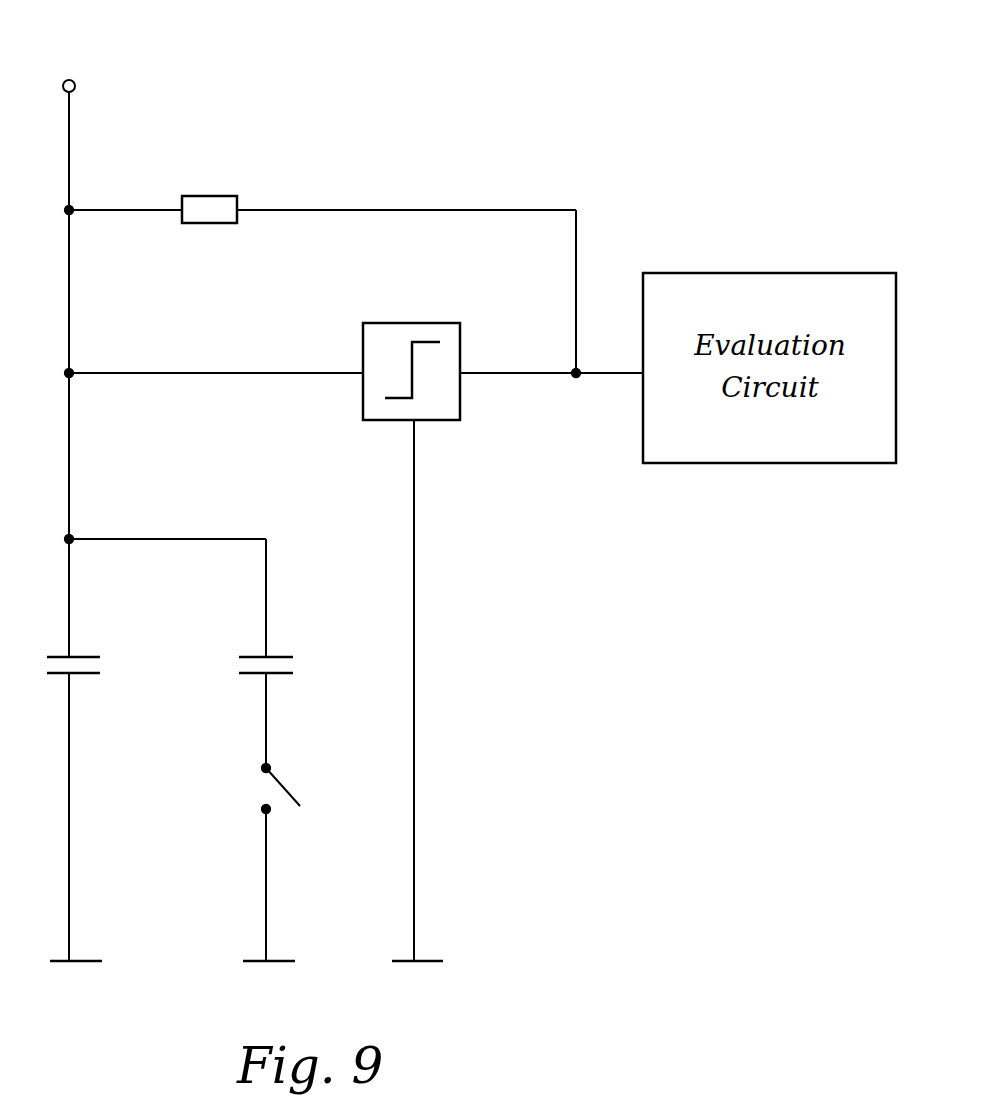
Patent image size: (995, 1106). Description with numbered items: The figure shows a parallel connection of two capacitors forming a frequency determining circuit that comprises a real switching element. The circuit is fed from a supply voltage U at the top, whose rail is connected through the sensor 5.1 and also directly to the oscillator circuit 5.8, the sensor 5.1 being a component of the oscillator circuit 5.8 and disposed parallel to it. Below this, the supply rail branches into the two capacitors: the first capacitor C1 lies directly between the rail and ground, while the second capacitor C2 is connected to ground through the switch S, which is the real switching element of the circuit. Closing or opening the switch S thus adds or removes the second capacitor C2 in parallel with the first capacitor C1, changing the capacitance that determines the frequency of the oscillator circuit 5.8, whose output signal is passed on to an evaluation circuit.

The sensor 5.1 is at (210, 225).
The oscillator circuit 5.8 is at (465, 432).
The first capacitor C1 is at (111, 667).
The second capacitor C2 is at (306, 665).
The switch S is at (293, 804).
The supply voltage U is at (86, 54).